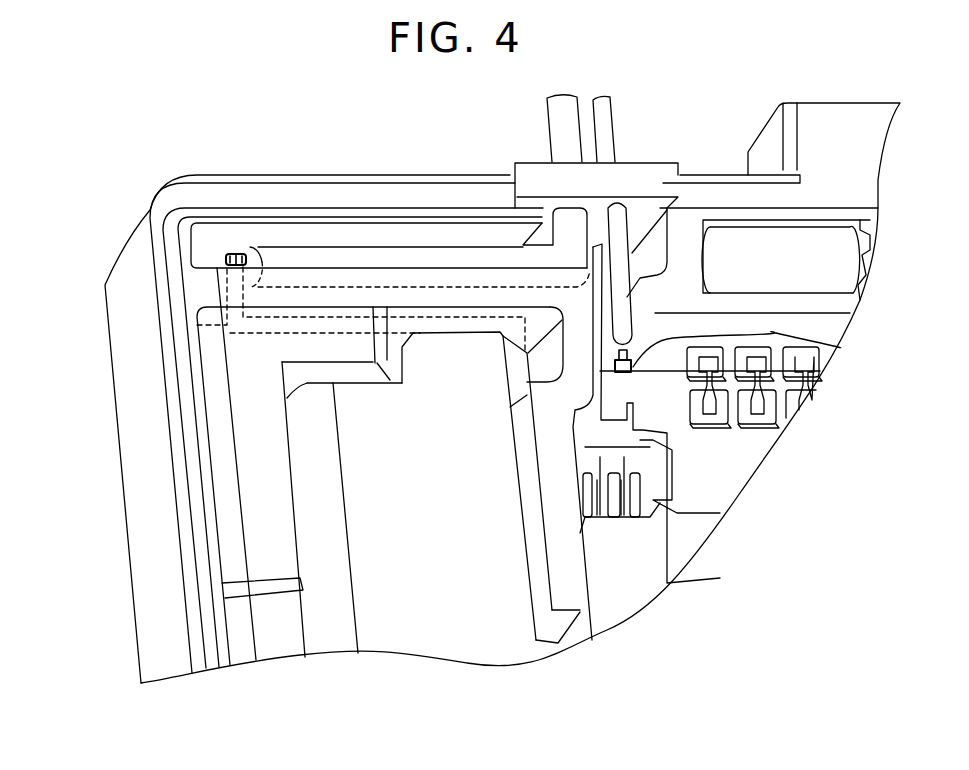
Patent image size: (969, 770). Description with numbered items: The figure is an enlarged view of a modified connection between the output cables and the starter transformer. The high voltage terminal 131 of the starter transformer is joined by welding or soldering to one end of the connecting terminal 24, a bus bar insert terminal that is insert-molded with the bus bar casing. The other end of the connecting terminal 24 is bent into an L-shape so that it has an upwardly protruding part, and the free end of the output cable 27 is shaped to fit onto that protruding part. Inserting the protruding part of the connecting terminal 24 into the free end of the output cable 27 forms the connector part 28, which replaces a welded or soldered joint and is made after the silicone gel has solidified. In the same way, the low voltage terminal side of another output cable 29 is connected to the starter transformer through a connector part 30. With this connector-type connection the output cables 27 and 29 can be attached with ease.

The connecting terminal 24 is at (197, 325).
The output cable 27 is at (557, 134).
The connector part 28 is at (233, 256).
The output cable 29 is at (598, 134).
The connector part 30 is at (837, 347).
The high voltage terminal 131 is at (517, 372).